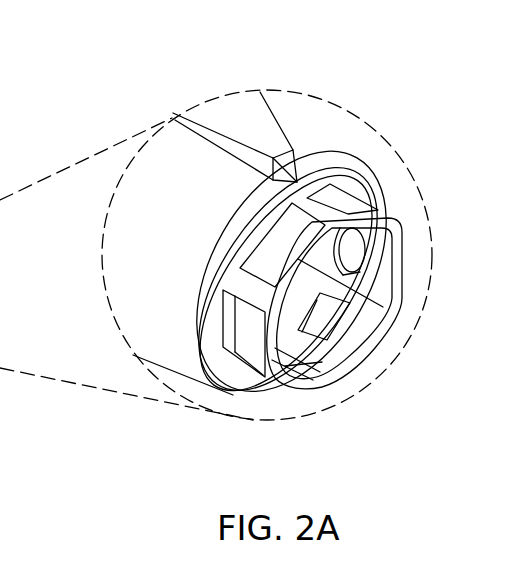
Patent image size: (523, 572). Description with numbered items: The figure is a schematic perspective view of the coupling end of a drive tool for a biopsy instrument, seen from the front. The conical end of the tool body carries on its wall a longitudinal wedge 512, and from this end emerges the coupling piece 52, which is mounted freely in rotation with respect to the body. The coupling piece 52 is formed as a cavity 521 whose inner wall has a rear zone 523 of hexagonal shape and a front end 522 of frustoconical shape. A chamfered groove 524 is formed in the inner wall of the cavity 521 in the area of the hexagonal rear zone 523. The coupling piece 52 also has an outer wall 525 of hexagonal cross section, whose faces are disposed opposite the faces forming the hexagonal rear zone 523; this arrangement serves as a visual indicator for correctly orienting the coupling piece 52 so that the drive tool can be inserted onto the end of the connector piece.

The coupling piece 52 is at (406, 221).
The longitudinal wedge 512 is at (213, 113).
The cavity 521 is at (313, 290).
The front end 522 is at (345, 357).
The rear zone 523 is at (288, 386).
The chamfered groove 524 is at (326, 328).
The outer wall 525 is at (268, 270).